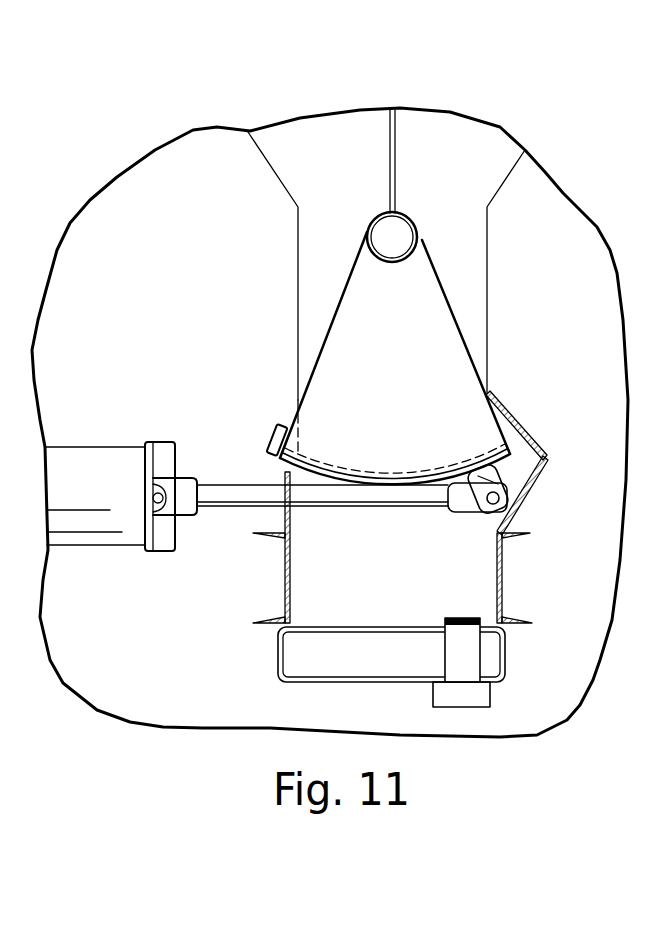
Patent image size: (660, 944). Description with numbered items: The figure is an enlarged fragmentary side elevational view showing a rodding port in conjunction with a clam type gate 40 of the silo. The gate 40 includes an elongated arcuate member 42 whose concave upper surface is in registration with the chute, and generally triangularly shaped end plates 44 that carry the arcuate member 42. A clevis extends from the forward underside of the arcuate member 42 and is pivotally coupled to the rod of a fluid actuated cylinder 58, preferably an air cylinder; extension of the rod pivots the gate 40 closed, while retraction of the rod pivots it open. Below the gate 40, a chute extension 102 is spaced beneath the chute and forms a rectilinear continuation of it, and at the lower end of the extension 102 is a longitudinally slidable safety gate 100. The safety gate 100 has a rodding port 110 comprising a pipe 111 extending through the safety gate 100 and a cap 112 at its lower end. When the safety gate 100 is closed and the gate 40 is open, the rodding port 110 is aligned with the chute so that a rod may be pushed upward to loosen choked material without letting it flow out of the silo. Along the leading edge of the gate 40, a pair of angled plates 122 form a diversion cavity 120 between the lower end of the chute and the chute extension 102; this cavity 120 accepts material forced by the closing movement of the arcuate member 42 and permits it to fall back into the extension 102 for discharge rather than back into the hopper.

The clam type gate 40 is at (262, 311).
The end plate 44 is at (403, 394).
The fluid actuated cylinder 58 is at (88, 447).
The arcuate member 42 is at (322, 478).
The angled plate 122 is at (523, 430).
The diversion cavity 120 is at (523, 465).
The chute extension 102 is at (285, 555).
The safety gate 100 is at (278, 650).
The rodding port 110 is at (445, 652).
The pipe 111 is at (468, 658).
The cap 112 is at (452, 697).